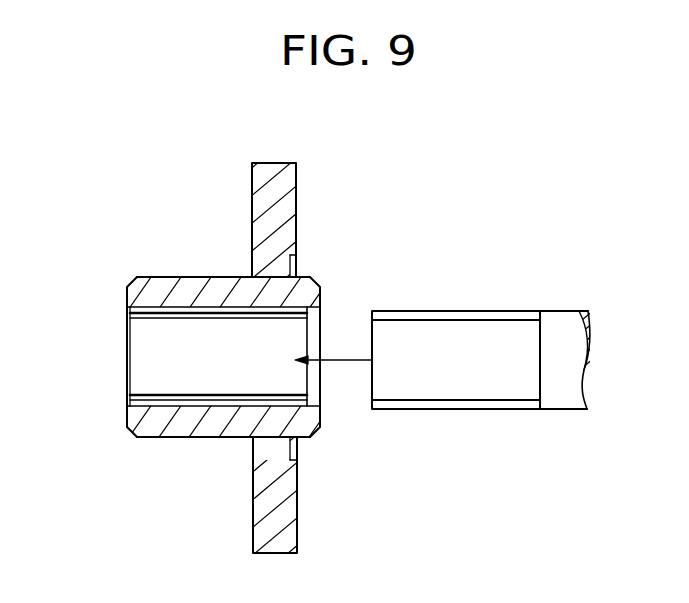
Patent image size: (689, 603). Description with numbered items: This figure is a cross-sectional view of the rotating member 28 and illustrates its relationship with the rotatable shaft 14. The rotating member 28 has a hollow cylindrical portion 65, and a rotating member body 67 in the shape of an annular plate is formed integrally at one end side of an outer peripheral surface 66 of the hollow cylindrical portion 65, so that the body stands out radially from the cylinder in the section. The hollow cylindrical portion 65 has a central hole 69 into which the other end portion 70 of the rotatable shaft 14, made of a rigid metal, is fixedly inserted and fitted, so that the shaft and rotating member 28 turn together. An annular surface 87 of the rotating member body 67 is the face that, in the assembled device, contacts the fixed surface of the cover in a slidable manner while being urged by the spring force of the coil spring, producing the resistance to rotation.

The rotating member 28 is at (365, 221).
The central hole 69 is at (138, 355).
The hollow cylindrical portion 65 is at (192, 277).
The outer peripheral surface 66 is at (203, 437).
The annular surface 87 is at (298, 202).
The rotating member body 67 is at (285, 512).
The other end portion 70 is at (465, 352).
The rotatable shaft 14 is at (563, 347).